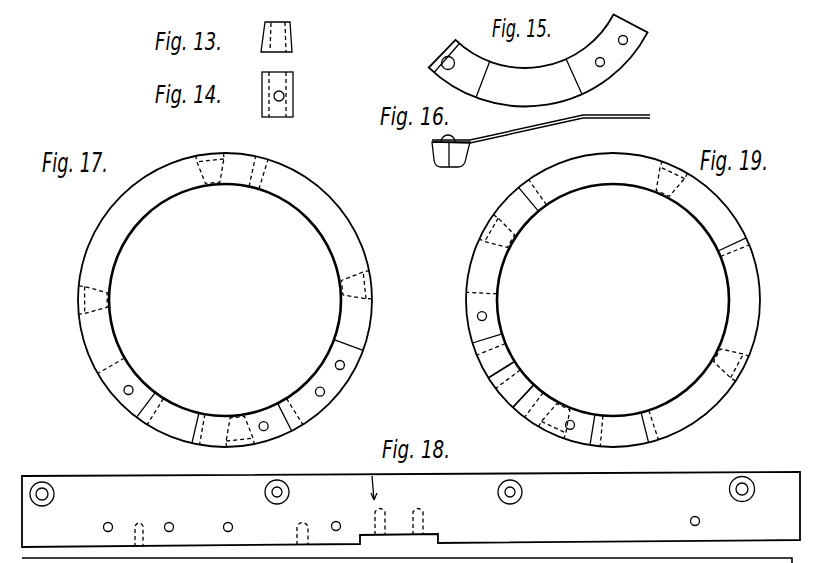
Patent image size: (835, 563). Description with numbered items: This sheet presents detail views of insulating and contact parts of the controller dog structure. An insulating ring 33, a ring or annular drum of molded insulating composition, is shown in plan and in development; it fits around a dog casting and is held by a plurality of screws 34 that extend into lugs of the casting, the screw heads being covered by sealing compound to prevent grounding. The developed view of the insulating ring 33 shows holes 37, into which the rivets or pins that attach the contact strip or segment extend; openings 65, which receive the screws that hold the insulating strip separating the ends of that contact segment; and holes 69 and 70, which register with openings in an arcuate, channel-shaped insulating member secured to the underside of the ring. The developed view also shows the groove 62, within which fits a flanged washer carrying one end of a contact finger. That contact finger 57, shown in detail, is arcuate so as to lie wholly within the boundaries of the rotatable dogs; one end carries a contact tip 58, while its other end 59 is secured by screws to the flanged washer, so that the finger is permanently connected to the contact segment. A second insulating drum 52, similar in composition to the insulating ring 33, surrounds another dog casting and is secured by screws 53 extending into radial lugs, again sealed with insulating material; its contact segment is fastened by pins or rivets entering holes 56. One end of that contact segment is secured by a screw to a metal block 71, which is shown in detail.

In FIG. 13, the metal block 71 is at (293, 37).
In FIG. 14, the metal block 71 is at (294, 99).
In FIG. 15, the contact finger 57 is at (523, 83).
In FIG. 16, the contact tip 58 is at (432, 157).
In FIG. 16, the other end 59 is at (645, 115).
In FIG. 17, the insulating ring 33 is at (337, 213).
In FIG. 18, the insulating ring 33 is at (127, 477).
In FIG. 17, the screws 34 is at (208, 185).
In FIG. 18, the screws 34 is at (266, 493).
In FIG. 17, the holes 37 is at (107, 372).
In FIG. 18, the holes 37 is at (337, 521).
In FIG. 19, the insulating drum 52 is at (733, 309).
In FIG. 19, the screws 53 is at (673, 182).
In FIG. 19, the holes 56 is at (590, 435).
In FIG. 18, the openings 65 is at (224, 526).
In FIG. 18, the hole 69 is at (145, 535).
In FIG. 18, the hole 70 is at (297, 532).
In FIG. 18, the groove 62 is at (420, 538).